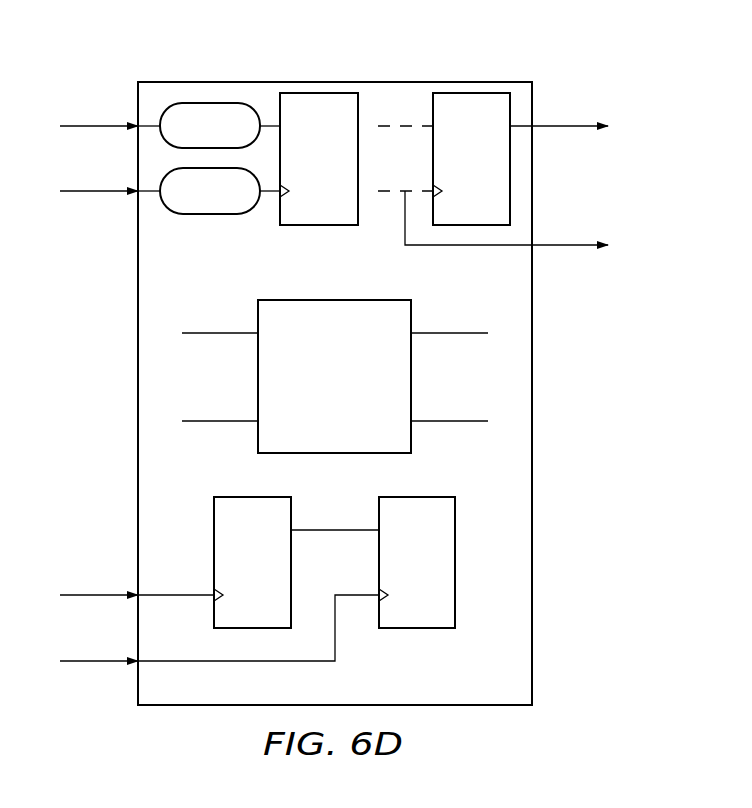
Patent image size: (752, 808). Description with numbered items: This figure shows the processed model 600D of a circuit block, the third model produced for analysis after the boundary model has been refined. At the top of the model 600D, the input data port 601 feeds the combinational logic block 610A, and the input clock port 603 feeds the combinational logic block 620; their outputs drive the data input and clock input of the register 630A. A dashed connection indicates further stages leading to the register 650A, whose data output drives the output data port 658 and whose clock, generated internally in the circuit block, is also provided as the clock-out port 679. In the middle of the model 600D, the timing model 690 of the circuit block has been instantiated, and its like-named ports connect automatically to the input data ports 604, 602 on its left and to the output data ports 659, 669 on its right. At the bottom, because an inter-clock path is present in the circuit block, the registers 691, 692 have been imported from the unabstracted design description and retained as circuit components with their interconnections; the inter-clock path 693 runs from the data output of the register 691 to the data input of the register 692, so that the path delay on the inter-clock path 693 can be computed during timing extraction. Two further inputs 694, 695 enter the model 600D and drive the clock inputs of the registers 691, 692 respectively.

The processed model 600D is at (556, 47).
The input data port 601 is at (105, 123).
The input clock port 603 is at (105, 188).
The combinational logic block 610A is at (237, 137).
The combinational logic block 620 is at (230, 203).
The register 630A is at (348, 170).
The register 650A is at (500, 170).
The output data port 658 is at (565, 123).
The clock-out port 679 is at (565, 243).
The timing model 690 is at (355, 390).
The input data port 604 is at (224, 332).
The input data port 602 is at (224, 420).
The output data port 659 is at (445, 332).
The output data port 669 is at (445, 420).
The register 691 is at (273, 573).
The register 692 is at (437, 573).
The inter-clock path 693 is at (343, 529).
The first control clock input 694 is at (105, 597).
The second control clock input 695 is at (105, 663).